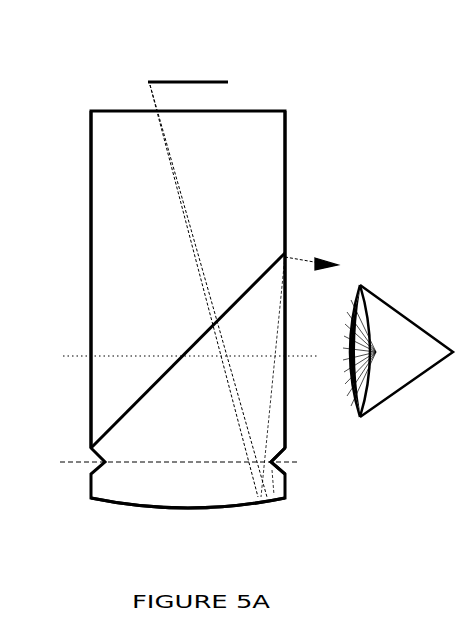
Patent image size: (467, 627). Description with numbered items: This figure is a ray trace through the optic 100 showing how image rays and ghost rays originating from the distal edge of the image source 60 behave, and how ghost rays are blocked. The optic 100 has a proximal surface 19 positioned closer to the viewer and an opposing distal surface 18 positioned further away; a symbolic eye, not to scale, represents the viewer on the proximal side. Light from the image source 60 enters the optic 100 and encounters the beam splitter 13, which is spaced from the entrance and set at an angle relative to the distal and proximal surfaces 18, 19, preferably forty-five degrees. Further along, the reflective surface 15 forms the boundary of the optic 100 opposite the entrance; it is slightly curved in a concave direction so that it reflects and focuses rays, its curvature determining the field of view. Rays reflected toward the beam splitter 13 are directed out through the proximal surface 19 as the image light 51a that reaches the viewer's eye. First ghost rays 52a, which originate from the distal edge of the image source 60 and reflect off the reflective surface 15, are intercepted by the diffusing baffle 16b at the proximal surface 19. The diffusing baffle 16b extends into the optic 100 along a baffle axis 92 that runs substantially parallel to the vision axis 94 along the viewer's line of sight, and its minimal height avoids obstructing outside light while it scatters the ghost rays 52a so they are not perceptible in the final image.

The optic 100 is at (305, 79).
The distal surface 18 is at (88, 160).
The proximal surface 19 is at (288, 157).
The beam splitter 13 is at (150, 388).
The image source 60 is at (197, 80).
The vision axis 94 is at (80, 357).
The baffle axis 92 is at (77, 462).
The diffusing baffle 16b is at (300, 463).
The first ghost rays 52a is at (286, 486).
The reflective surface 15 is at (128, 505).
The output light 51a is at (297, 257).